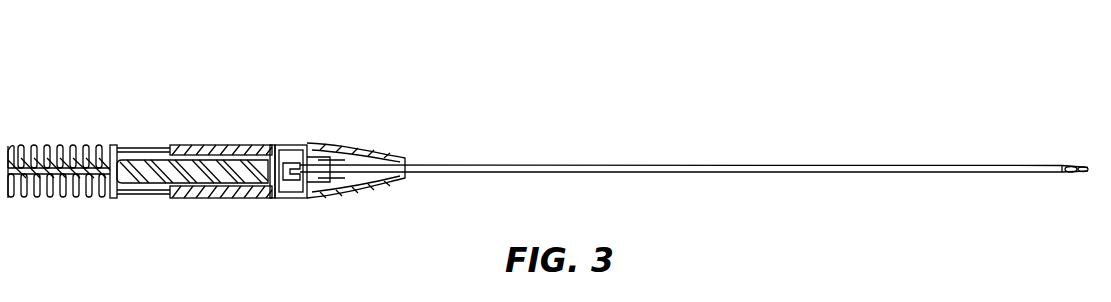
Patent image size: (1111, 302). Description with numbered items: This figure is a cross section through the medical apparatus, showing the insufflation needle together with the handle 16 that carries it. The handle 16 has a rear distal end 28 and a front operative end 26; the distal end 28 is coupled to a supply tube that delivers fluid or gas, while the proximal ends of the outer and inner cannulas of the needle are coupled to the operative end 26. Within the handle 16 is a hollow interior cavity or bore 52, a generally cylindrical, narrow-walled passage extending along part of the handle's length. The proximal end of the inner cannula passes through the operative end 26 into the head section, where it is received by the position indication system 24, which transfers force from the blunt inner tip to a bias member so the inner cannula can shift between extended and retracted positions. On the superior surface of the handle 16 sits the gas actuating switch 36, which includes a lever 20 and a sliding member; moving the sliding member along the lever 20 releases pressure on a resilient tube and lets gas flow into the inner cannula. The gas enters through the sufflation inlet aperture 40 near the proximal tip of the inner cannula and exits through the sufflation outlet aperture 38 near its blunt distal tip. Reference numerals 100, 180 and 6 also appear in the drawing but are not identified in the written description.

The device 100 is at (712, 110).
The elongate shaft 180 is at (870, 155).
The rear distal end 28 is at (33, 143).
The handle 16 is at (66, 208).
The section line 6- 6 is at (94, 160).
The gas actuating switch 36 is at (242, 135).
The lever 20 is at (158, 150).
The hollow interior cavity or bore 52 is at (270, 208).
The position indication system 24 is at (292, 200).
The front operative end 26 is at (408, 148).
The sufflation inlet aperture 40 is at (70, 224).
The sufflation outlet aperture 38 is at (1000, 234).